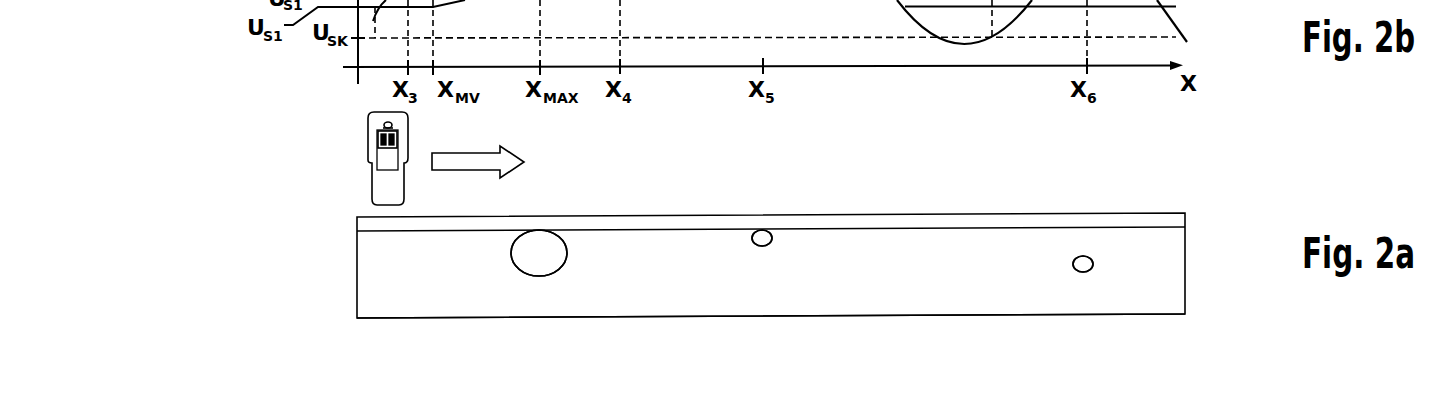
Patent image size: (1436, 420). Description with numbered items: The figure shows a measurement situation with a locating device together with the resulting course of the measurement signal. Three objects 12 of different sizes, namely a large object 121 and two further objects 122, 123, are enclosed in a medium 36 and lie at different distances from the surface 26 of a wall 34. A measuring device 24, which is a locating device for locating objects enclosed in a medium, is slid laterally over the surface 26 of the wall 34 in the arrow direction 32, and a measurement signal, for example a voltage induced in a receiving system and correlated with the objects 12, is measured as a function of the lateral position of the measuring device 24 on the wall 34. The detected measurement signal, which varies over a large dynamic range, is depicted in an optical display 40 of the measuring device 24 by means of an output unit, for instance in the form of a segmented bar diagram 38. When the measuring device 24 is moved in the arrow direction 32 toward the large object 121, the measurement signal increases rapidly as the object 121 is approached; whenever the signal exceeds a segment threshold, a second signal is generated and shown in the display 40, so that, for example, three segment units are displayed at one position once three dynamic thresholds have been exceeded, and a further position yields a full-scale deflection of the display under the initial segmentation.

The objects 12 is at (1069, 270).
The large object 121 is at (545, 246).
The object 122 is at (768, 231).
The object 123 is at (1089, 272).
The measuring device 24 is at (388, 185).
The surface 26 is at (1132, 209).
The arrow direction 32 is at (517, 150).
The wall 34 is at (1175, 220).
The medium 36 is at (1175, 288).
The segmented bar diagram 38 is at (378, 140).
The optical display 40 is at (399, 134).